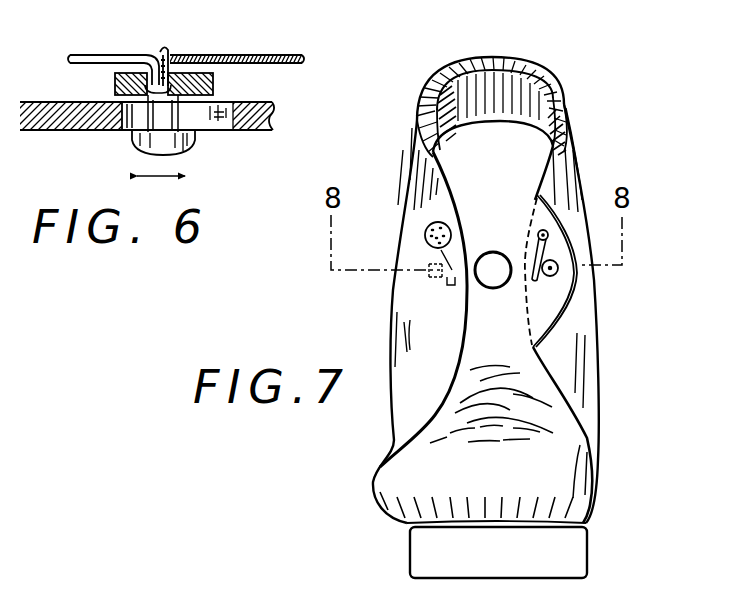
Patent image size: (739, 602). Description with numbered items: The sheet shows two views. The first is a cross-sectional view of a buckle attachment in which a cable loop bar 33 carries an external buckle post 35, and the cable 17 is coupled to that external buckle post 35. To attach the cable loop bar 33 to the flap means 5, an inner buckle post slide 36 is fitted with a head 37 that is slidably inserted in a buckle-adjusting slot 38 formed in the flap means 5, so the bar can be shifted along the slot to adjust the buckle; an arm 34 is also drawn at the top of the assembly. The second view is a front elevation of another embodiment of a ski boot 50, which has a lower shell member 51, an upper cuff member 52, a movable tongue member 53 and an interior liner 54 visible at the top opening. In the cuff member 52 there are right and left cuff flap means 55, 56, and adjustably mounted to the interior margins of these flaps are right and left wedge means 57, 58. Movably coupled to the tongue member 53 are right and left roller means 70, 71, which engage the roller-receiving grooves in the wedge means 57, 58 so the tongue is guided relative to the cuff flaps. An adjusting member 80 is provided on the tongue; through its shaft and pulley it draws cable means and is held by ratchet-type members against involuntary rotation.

In FIG. 6, the flap means 5 is at (261, 128).
In FIG. 6, the cable 17 is at (236, 55).
In FIG. 6, the cable loop bar 33 is at (214, 90).
In FIG. 6, the lever arm 34 is at (125, 54).
In FIG. 6, the external buckle post 35 is at (168, 55).
In FIG. 6, the inner buckle post slide 36 is at (128, 140).
In FIG. 6, the head 37 is at (190, 150).
In FIG. 6, the buckle-adjusting slot 38 is at (207, 120).
In FIG. 7, the ski boot 50 is at (565, 82).
In FIG. 7, the lower shell member 51 is at (546, 489).
In FIG. 7, the upper cuff member 52 is at (581, 162).
In FIG. 7, the movable tongue member 53 is at (517, 370).
In FIG. 7, the interior liner 54 is at (469, 65).
In FIG. 7, the right cuff flap means 55 is at (418, 320).
In FIG. 7, the left cuff flap means 56 is at (579, 364).
In FIG. 7, the right wedge means 57 is at (431, 255).
In FIG. 7, the left wedge means 58 is at (544, 247).
In FIG. 7, the right roller means 70 is at (428, 274).
In FIG. 7, the left roller means 71 is at (558, 271).
In FIG. 7, the adjusting member 80 is at (485, 248).